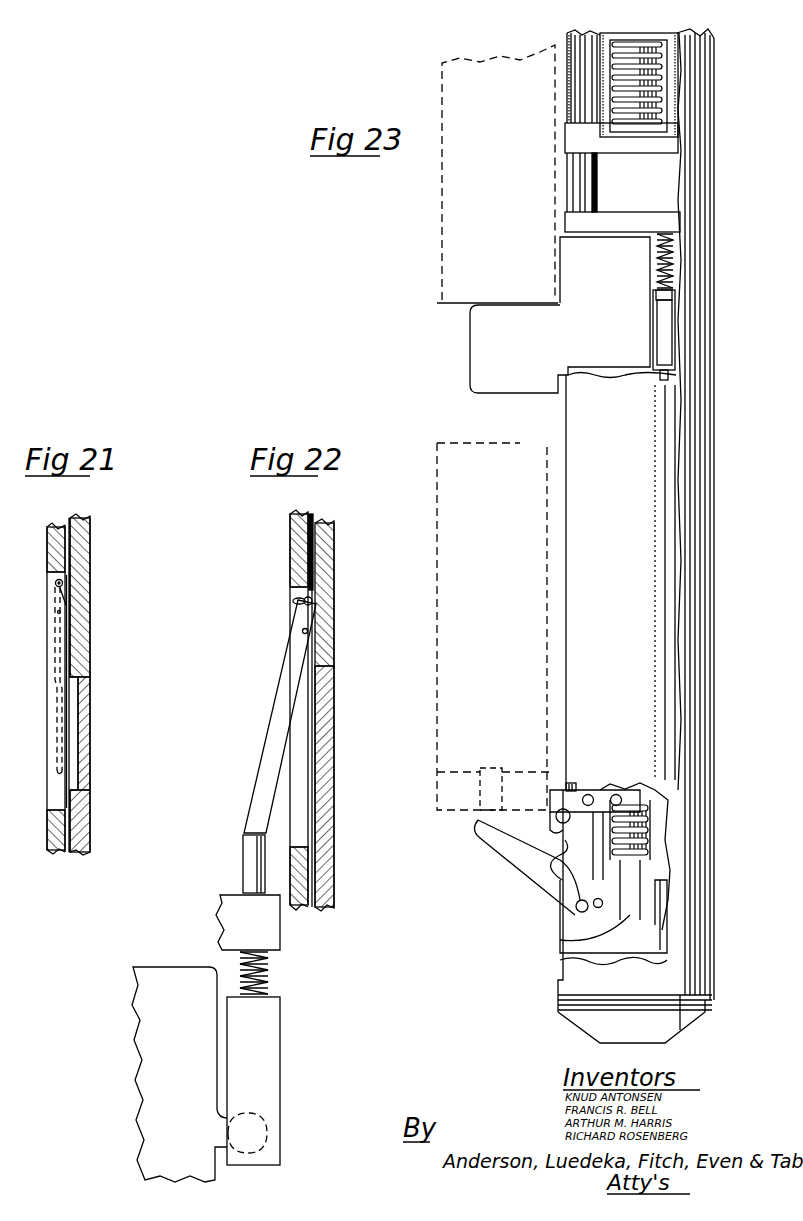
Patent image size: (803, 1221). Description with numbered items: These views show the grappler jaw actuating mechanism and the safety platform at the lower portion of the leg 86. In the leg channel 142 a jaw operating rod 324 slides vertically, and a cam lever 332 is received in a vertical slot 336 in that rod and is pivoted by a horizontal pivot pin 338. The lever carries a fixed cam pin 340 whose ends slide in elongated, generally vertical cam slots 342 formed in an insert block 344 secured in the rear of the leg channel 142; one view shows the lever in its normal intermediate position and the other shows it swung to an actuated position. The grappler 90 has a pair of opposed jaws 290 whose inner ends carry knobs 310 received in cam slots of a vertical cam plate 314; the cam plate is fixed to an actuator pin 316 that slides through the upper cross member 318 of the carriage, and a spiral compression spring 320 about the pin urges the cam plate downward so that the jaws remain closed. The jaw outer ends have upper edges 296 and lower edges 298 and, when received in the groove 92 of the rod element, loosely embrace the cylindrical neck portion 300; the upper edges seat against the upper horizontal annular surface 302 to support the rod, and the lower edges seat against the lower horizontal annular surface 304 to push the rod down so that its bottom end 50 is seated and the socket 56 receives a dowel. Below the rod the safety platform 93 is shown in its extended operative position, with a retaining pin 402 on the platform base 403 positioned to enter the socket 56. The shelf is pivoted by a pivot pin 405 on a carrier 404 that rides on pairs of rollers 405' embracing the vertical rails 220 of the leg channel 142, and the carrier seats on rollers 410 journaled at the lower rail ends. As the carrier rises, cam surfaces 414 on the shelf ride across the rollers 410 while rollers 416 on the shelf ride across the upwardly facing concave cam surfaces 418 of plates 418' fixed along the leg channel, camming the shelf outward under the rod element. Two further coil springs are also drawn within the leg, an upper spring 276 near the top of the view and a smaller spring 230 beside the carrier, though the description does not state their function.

In FIG. 23, the bottom end 50 is at (630, 1043).
In FIG. 23, the socket 56 is at (480, 787).
In FIG. 23, the leg 86 is at (720, 419).
In FIG. 23, the grappler 90 is at (490, 338).
In FIG. 23, the groove 92 is at (457, 415).
In FIG. 23, the safety platform 93 is at (490, 850).
In FIG. 23, the leg channel 142 is at (703, 498).
In FIG. 23, the vertical rails 220 is at (593, 797).
In FIG. 23, the spring 230 is at (645, 812).
In FIG. 23, the spring 276 is at (663, 60).
In FIG. 22, the jaws 290 is at (150, 1045).
In FIG. 23, the jaws 290 is at (498, 355).
In FIG. 23, the upper edges 296 is at (498, 303).
In FIG. 23, the lower edges 298 is at (488, 398).
In FIG. 23, the cylindrical neck portion 300 is at (493, 417).
In FIG. 23, the upper horizontal annular surface 302 is at (458, 307).
In FIG. 23, the lower horizontal annular surface 304 is at (523, 443).
In FIG. 22, the knobs 310 is at (262, 1122).
In FIG. 23, the knobs 310 is at (653, 299).
In FIG. 22, the cam plate 314 is at (268, 1023).
In FIG. 23, the cam plate 314 is at (667, 327).
In FIG. 22, the actuator pin 316 is at (251, 864).
In FIG. 23, the actuator pin 316 is at (668, 376).
In FIG. 22, the upper cross member 318 is at (270, 931).
In FIG. 22, the spring 320 is at (268, 969).
In FIG. 23, the spring 320 is at (668, 253).
In FIG. 22, the jaw operating rod 324 is at (297, 529).
In FIG. 21, the cam lever 332 is at (67, 637).
In FIG. 22, the cam lever 332 is at (274, 731).
In FIG. 21, the vertical slot 336 is at (52, 734).
In FIG. 22, the vertical slot 336 is at (306, 709).
In FIG. 21, the pivot pin 338 is at (58, 611).
In FIG. 22, the pivot pin 338 is at (309, 630).
In FIG. 21, the cam pin 340 is at (55, 584).
In FIG. 22, the cam pin 340 is at (313, 601).
In FIG. 21, the cam slots 342 is at (56, 665).
In FIG. 22, the cam slots 342 is at (279, 552).
In FIG. 21, the insert block 344 is at (82, 590).
In FIG. 22, the insert block 344 is at (330, 644).
In FIG. 23, the retaining pin 402 is at (477, 818).
In FIG. 23, the platform base 403 is at (517, 803).
In FIG. 23, the carrier 404 is at (573, 793).
In FIG. 23, the pivot pin 405 is at (551, 823).
In FIG. 23, the rollers 405' is at (653, 784).
In FIG. 23, the rollers 410 is at (590, 917).
In FIG. 23, the cam surfaces 414 is at (557, 868).
In FIG. 23, the rollers 416 is at (577, 904).
In FIG. 23, the concave cam surfaces 418 is at (656, 916).
In FIG. 23, the plates 418' is at (709, 915).